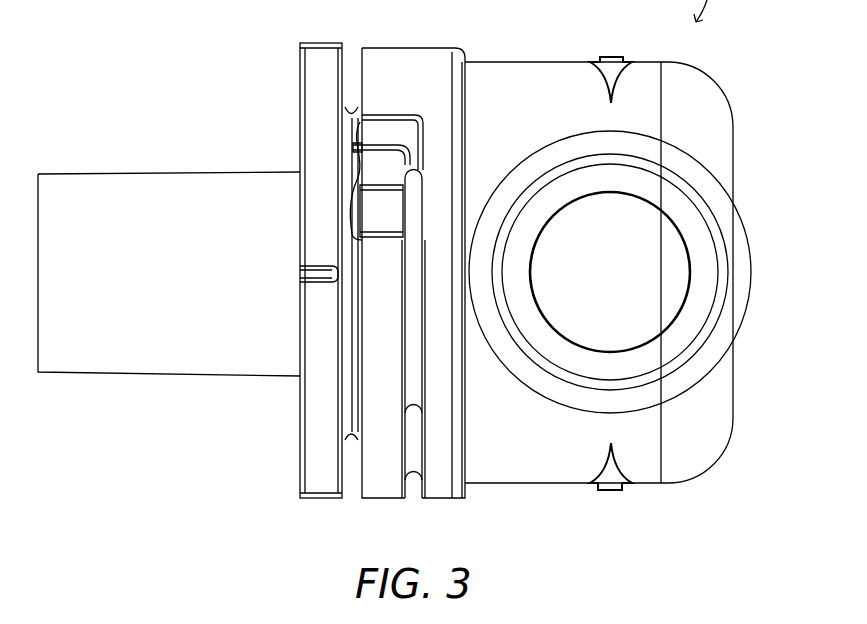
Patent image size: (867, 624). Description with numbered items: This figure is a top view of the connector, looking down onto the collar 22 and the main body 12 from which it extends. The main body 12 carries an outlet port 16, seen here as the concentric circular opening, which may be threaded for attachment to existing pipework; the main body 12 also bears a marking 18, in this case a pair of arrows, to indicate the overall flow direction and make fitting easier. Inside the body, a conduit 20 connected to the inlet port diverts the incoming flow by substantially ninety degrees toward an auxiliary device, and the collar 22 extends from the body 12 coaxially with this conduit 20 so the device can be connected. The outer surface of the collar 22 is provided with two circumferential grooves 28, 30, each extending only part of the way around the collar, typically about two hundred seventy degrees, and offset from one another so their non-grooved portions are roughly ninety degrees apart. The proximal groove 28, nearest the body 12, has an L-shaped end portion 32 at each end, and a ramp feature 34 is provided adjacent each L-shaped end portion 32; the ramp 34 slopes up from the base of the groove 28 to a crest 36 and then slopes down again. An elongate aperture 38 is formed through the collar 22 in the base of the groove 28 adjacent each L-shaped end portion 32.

The main body 12 is at (727, 138).
The outlet port 16 is at (665, 300).
The marking 18 is at (612, 57).
The conduit 20 is at (160, 172).
The collar 22 is at (405, 57).
The proximal groove 28 is at (410, 493).
The groove 30 is at (352, 493).
The L-shaped end portion 32 is at (388, 127).
The ramp feature 34 is at (390, 167).
The crest 36 is at (372, 185).
The elongate aperture 38 is at (415, 355).